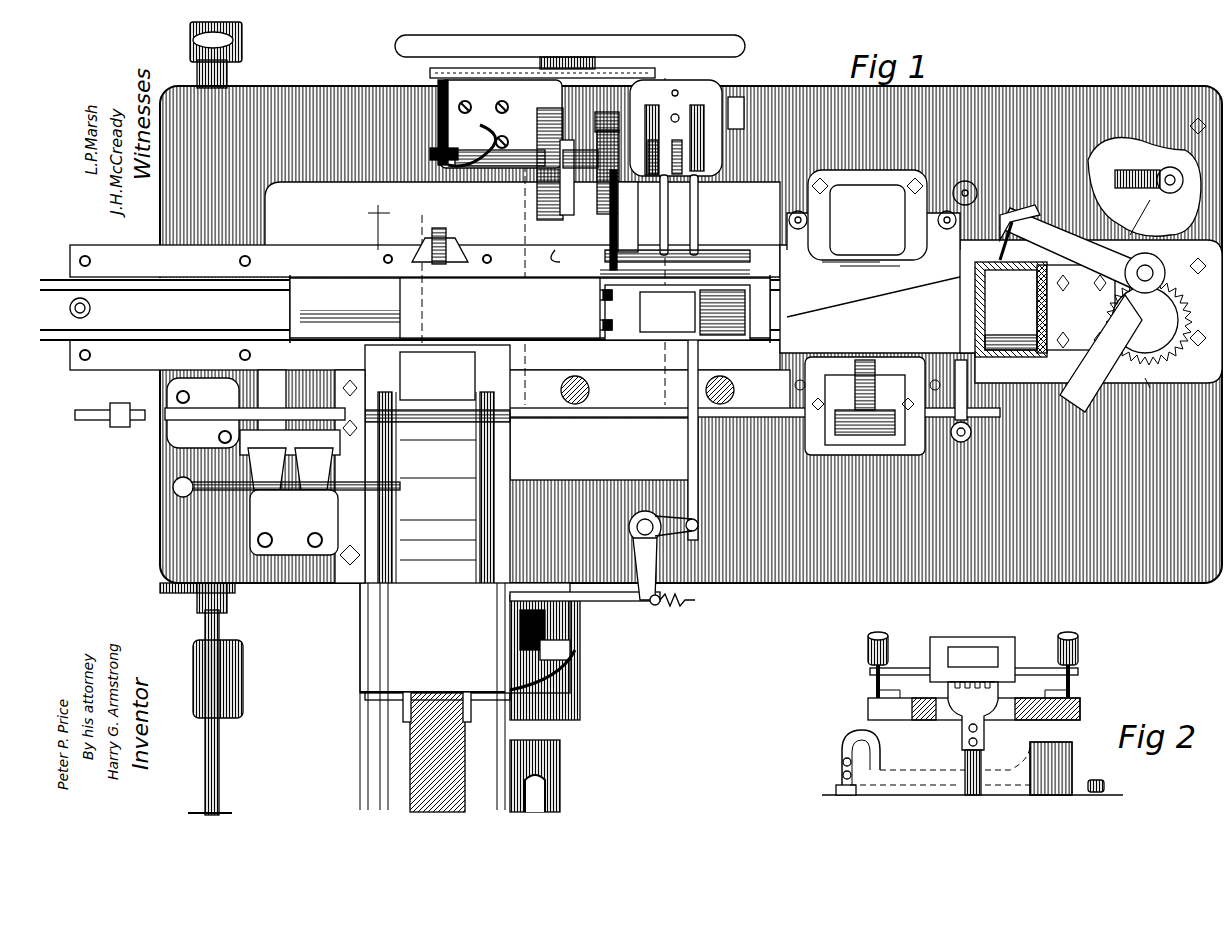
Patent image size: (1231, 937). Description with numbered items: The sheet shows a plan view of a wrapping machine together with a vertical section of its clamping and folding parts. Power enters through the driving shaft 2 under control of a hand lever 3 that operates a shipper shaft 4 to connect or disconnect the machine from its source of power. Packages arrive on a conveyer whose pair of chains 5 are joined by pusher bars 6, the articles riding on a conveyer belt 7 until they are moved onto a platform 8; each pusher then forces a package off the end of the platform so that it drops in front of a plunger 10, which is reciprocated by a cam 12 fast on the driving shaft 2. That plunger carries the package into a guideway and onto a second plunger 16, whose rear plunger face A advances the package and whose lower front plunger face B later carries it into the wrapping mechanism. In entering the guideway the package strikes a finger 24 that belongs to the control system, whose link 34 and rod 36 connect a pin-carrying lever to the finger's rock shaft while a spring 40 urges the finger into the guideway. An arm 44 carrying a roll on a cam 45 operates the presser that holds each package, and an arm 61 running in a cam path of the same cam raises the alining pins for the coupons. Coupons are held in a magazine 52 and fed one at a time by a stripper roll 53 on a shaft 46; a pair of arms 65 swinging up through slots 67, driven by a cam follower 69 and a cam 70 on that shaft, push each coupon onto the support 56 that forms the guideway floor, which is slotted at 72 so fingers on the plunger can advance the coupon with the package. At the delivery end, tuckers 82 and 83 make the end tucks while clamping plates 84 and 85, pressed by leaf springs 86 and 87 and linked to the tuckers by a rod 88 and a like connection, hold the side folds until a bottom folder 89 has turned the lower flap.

In FIG. 1, the driving shaft 2 is at (560, 775).
In FIG. 1, the hand lever 3 is at (235, 42).
In FIG. 1, the shipper shaft 4 is at (220, 742).
In FIG. 1, the chains 5 is at (470, 594).
In FIG. 1, the pusher bars 6 is at (435, 580).
In FIG. 1, the conveyer belt 7 is at (525, 70).
In FIG. 1, the platform 8 is at (680, 80).
In FIG. 1, the plunger 10 is at (437, 522).
In FIG. 1, the cam 12 is at (580, 705).
In FIG. 1, the plunger 16 is at (430, 628).
In FIG. 1, the finger 24 is at (430, 252).
In FIG. 1, the link 34 is at (640, 605).
In FIG. 1, the rod 36 is at (700, 460).
In FIG. 1, the spring 40 is at (678, 605).
In FIG. 1, the arm 44 is at (625, 220).
In FIG. 1, the cam 45 is at (596, 198).
In FIG. 1, the shaft 46 is at (555, 164).
In FIG. 1, the magazine 52 is at (712, 112).
In FIG. 1, the stripper roll 53 is at (660, 150).
In FIG. 1, the support 56 is at (667, 312).
In FIG. 1, the arm 61 is at (592, 105).
In FIG. 1, the arms 65 is at (700, 210).
In FIG. 1, the slots 67 is at (665, 236).
In FIG. 1, the cam follower 69 is at (555, 232).
In FIG. 1, the cam 70 is at (540, 206).
In FIG. 1, the slots 72 is at (680, 330).
In FIG. 1, the tucker 82 is at (1060, 200).
In FIG. 1, the tucker 83 is at (1090, 405).
In FIG. 1, the clamping plate 84 is at (1011, 309).
In FIG. 1, the clamping plate 85 is at (1011, 337).
In FIG. 1, the leaf spring 86 is at (1028, 309).
In FIG. 1, the leaf spring 87 is at (1063, 307).
In FIG. 1, the rod 88 is at (1019, 232).
In FIG. 2, the bottom folder 89 is at (1005, 752).
In FIG. 1, the plunger face A is at (296, 308).
In FIG. 1, the plunger face B is at (612, 306).